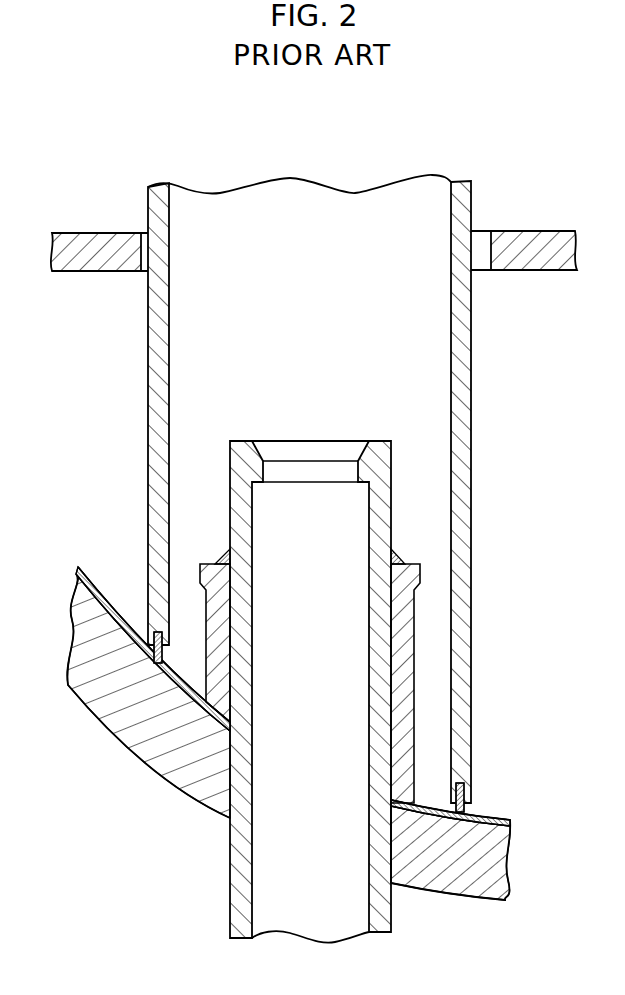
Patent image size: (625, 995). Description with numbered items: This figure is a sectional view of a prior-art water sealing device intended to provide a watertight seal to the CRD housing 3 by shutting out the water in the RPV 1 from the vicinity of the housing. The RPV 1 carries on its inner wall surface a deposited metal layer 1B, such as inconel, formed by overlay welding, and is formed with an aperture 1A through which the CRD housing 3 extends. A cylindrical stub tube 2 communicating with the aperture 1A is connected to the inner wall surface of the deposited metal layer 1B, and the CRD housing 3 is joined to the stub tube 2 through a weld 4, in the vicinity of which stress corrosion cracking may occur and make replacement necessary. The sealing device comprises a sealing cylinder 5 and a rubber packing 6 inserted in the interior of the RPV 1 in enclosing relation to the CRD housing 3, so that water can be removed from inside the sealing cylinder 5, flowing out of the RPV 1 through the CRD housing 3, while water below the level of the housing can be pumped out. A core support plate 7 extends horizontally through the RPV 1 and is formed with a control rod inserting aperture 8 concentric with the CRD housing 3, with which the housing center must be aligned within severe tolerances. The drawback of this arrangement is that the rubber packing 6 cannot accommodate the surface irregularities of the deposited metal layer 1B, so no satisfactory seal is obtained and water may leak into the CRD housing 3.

The RPV 1 is at (143, 763).
The aperture 1A is at (379, 871).
The deposited metal layer 1B is at (506, 818).
The stub tube 2 is at (200, 605).
The CRD housing 3 is at (382, 441).
The weld 4 is at (226, 558).
The sealing cylinder 5 is at (148, 455).
The rubber packing 6 is at (467, 810).
The core support plate 7 is at (83, 272).
The control rod inserting aperture 8 is at (482, 270).